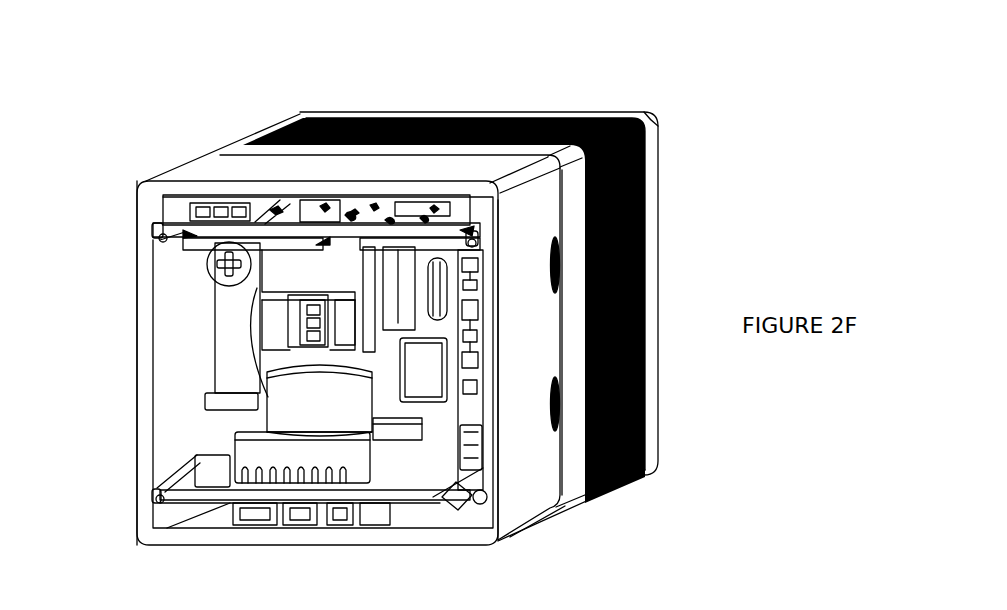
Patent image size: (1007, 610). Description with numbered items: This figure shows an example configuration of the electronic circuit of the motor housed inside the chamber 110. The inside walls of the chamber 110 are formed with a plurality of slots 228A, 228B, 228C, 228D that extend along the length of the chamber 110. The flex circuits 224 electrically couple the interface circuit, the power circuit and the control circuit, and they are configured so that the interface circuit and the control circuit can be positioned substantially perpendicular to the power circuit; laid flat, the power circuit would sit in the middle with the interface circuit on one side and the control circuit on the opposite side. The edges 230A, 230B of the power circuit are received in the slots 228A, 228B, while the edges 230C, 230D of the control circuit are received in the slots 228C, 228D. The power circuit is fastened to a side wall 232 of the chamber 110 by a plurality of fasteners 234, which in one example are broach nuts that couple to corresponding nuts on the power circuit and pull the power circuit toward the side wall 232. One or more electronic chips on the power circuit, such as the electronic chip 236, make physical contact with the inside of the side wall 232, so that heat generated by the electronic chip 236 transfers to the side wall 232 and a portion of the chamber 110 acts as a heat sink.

The chamber 110 is at (202, 167).
The flex circuits 224 is at (468, 205).
The slot 228A is at (155, 492).
The slot 228B is at (483, 492).
The slot 228C is at (157, 226).
The slot 228D is at (470, 234).
The edge of the power circuit 230A is at (160, 501).
The edge of the power circuit 230B is at (483, 492).
The edge of the control circuit 230C is at (163, 238).
The edge of the control circuit 230D is at (470, 240).
The side wall 232 is at (537, 502).
The fasteners 234 is at (547, 278).
The electronic chip 236 is at (472, 440).